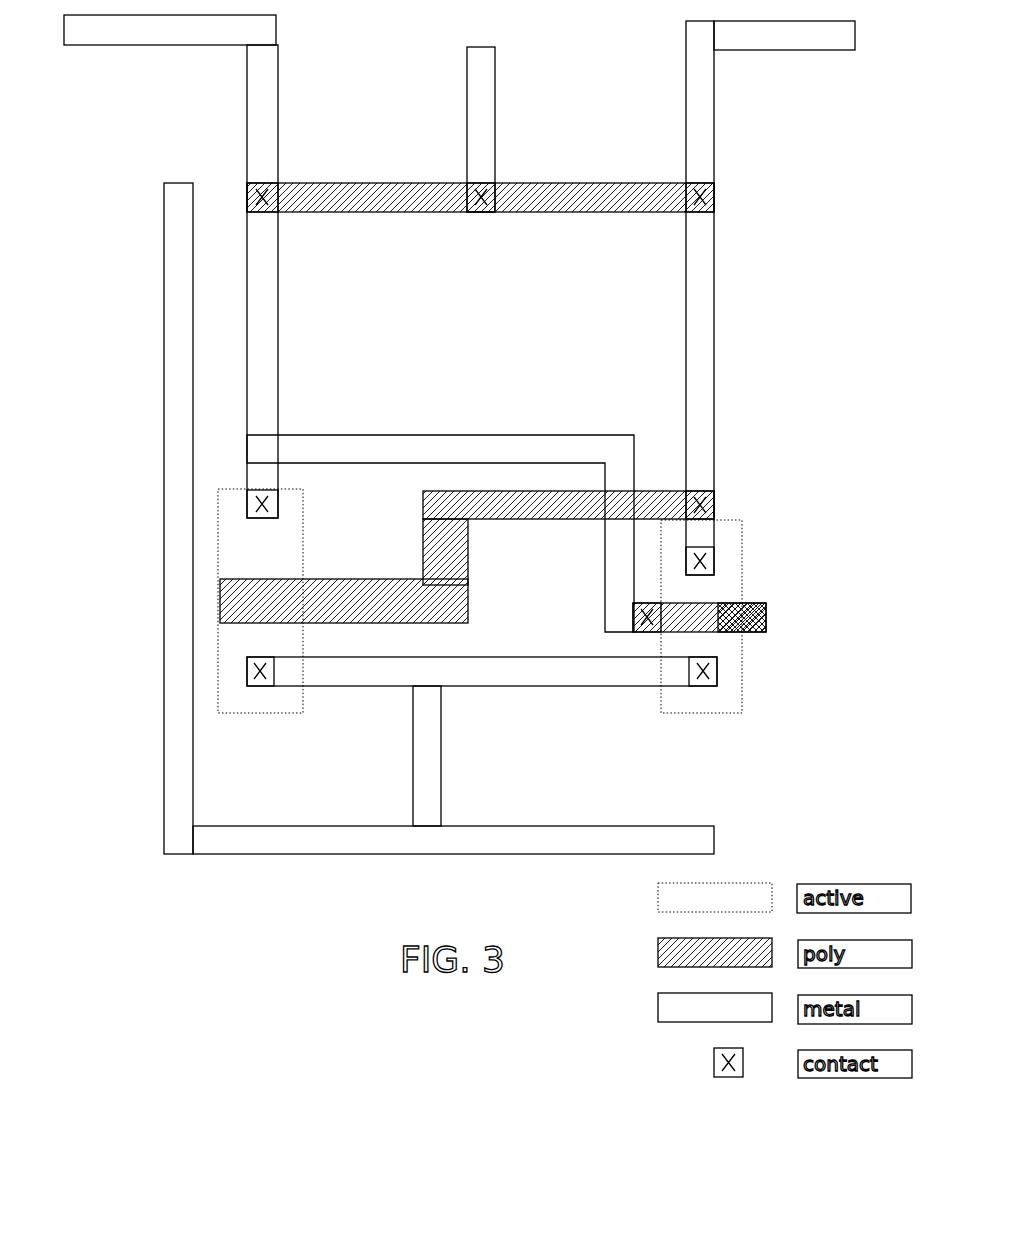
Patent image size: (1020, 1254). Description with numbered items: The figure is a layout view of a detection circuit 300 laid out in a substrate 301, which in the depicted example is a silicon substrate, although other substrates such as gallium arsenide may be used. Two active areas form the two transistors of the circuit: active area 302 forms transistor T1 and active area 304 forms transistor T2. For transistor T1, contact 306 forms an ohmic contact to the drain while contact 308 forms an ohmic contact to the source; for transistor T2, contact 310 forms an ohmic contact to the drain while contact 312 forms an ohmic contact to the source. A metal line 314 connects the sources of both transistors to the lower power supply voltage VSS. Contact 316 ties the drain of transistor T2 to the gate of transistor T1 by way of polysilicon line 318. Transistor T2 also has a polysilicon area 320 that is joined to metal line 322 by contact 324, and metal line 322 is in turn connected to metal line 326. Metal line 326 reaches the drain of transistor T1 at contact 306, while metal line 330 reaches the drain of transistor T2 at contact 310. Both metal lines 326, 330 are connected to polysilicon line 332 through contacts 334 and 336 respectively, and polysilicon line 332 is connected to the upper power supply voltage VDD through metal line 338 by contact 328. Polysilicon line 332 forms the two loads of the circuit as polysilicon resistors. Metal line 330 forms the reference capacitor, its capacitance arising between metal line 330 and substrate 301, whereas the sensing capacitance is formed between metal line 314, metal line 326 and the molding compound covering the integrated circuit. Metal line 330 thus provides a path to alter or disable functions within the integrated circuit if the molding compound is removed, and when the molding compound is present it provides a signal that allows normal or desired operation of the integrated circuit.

The detection circuit 300 is at (527, 53).
The substrate 301 is at (482, 362).
The active area 302 is at (285, 697).
The active area 304 is at (717, 714).
The contact 306 is at (278, 500).
The contact 308 is at (247, 672).
The contact 310 is at (714, 565).
The contact 312 is at (717, 672).
The metal line 314 is at (441, 735).
The contact 316 is at (714, 500).
The polysilicon line 318 is at (343, 579).
The polysilicon area 320 is at (718, 615).
The metal line 322 is at (396, 436).
The contact 324 is at (648, 606).
The metal line 326 is at (276, 362).
The contact 328 is at (479, 213).
The metal line 330 is at (714, 352).
The polysilicon line 332 is at (601, 212).
The contact 334 is at (262, 195).
The contact 336 is at (714, 198).
The metal line 338 is at (495, 115).